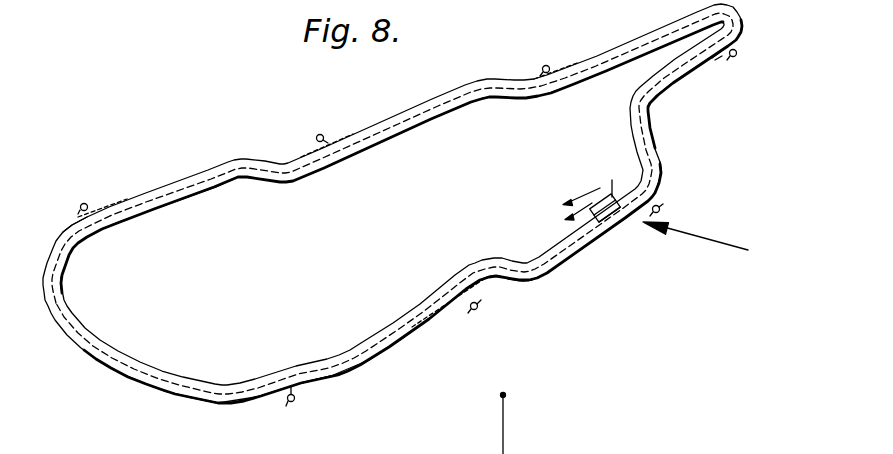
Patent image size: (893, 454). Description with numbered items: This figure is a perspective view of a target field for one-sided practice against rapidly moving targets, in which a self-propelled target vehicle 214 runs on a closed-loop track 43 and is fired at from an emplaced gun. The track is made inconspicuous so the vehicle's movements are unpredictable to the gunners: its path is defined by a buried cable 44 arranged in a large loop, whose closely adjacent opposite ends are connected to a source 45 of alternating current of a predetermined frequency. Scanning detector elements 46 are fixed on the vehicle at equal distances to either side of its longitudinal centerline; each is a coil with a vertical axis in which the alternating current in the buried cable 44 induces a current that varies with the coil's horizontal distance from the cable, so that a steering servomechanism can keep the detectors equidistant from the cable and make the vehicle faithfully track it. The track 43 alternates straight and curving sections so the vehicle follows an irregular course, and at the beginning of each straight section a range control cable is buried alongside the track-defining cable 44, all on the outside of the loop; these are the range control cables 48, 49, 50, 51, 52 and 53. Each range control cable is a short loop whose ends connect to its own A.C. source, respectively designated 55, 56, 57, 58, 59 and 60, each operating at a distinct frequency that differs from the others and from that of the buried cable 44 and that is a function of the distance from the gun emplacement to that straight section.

The closed-loop track 43 is at (341, 355).
The buried cable 44 is at (228, 388).
The source of alternating current 45 is at (285, 408).
The scanning detector elements 46 is at (589, 216).
The range control cable 48 is at (718, 62).
The range control cable 49 is at (660, 186).
The range control cable 50 is at (430, 324).
The range control cable 51 is at (66, 230).
The range control cable 52 is at (300, 157).
The range control cable 53 is at (558, 68).
The A.C. source 55 is at (740, 55).
The A.C. source 56 is at (661, 210).
The A.C. source 57 is at (480, 308).
The A.C. source 58 is at (89, 203).
The A.C. source 59 is at (318, 134).
The A.C. source 60 is at (543, 66).
The self-propelled target vehicle 214 is at (611, 223).